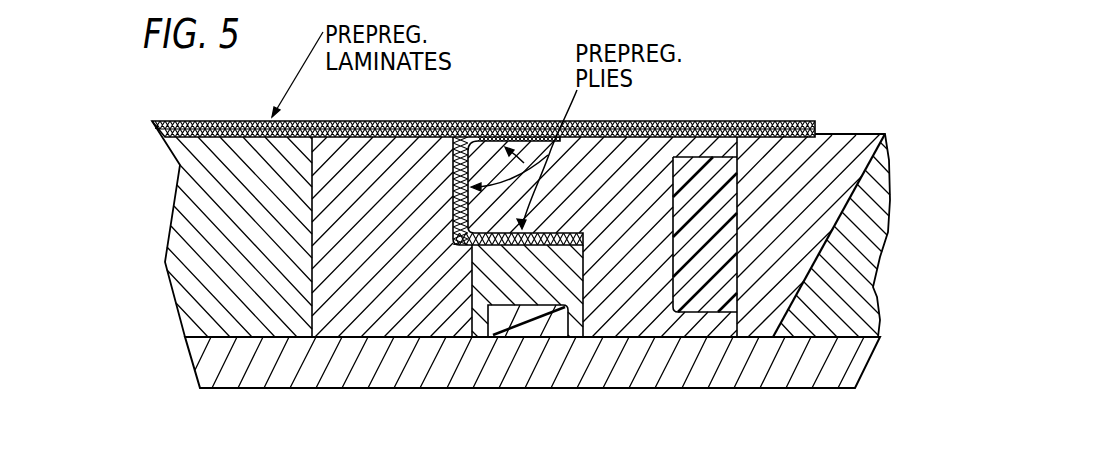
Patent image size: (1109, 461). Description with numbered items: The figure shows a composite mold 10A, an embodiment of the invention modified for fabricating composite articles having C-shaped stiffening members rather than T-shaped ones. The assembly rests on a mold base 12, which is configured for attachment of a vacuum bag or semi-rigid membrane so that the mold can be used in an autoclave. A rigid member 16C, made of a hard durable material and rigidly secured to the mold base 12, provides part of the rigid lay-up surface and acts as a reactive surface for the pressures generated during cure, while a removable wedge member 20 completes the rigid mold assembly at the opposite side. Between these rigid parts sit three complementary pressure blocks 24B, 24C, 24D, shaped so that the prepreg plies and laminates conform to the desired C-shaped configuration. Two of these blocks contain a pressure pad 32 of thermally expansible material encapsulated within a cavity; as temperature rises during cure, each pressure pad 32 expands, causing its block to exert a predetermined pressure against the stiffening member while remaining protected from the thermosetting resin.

The composite mold 10A is at (473, 100).
The mold base 12 is at (273, 365).
The rigid member 16C is at (218, 280).
The removable wedge member 20 is at (828, 155).
The complementary pressure block 24B is at (480, 313).
The complementary pressure block 24C is at (630, 313).
The complementary pressure block 24D is at (333, 317).
The pressure pad 32 is at (528, 325).